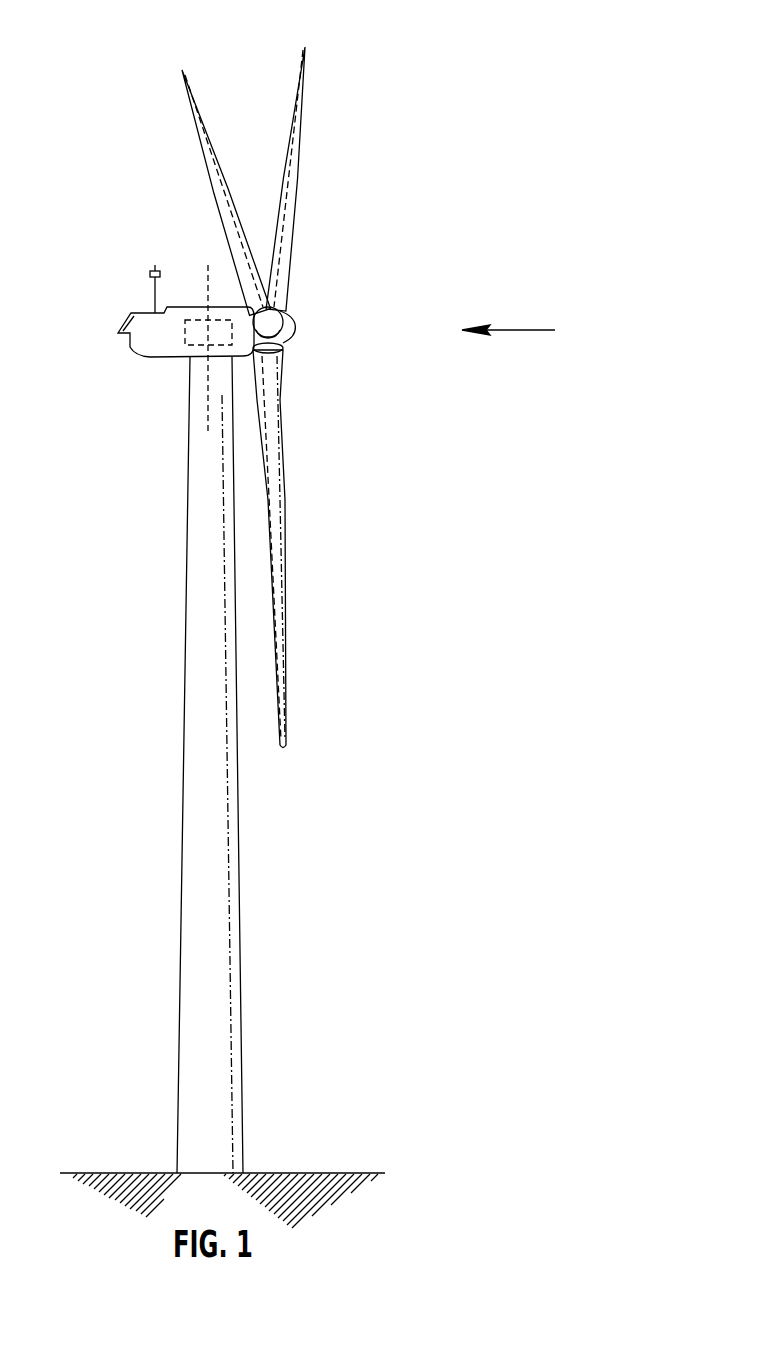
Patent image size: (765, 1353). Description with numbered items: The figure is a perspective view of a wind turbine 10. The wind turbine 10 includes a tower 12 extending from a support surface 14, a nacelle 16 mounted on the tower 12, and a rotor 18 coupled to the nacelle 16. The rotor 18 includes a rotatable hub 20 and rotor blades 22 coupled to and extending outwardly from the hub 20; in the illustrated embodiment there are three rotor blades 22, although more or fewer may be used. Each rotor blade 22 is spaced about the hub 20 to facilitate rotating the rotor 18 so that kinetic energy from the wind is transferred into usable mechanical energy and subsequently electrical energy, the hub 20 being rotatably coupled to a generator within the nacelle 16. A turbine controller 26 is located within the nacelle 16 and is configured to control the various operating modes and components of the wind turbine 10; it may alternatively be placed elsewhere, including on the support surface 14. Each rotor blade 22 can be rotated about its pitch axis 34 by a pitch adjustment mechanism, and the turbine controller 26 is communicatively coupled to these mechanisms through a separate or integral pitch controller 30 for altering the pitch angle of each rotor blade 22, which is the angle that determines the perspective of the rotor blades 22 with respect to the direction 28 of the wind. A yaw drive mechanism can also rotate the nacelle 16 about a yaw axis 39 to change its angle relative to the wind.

The wind turbine 10 is at (430, 146).
The tower 12 is at (188, 857).
The support surface 14 is at (158, 1172).
The nacelle 16 is at (162, 357).
The rotor 18 is at (300, 310).
The rotatable hub 20 is at (293, 328).
The rotor blade 22 is at (283, 160).
The turbine controller 26 is at (204, 316).
The direction of the wind 28 is at (510, 330).
The pitch controller 30 is at (321, 548).
The pitch axis 34 is at (228, 205).
The yaw axis 39 is at (207, 405).